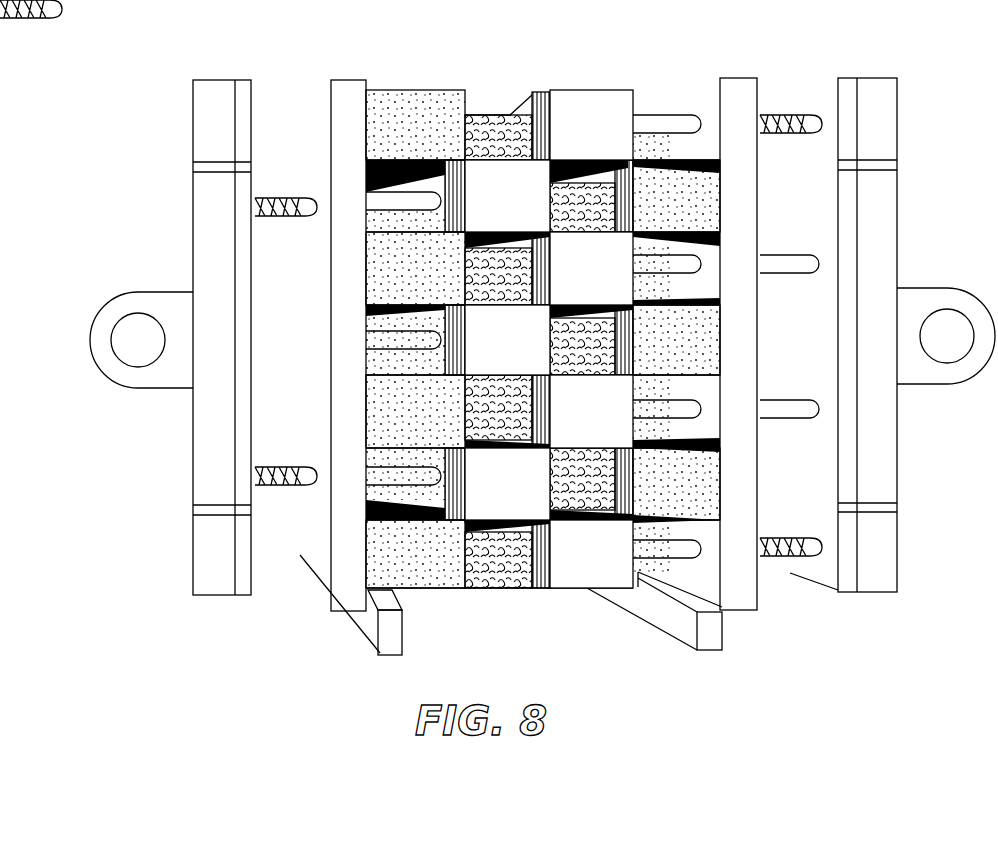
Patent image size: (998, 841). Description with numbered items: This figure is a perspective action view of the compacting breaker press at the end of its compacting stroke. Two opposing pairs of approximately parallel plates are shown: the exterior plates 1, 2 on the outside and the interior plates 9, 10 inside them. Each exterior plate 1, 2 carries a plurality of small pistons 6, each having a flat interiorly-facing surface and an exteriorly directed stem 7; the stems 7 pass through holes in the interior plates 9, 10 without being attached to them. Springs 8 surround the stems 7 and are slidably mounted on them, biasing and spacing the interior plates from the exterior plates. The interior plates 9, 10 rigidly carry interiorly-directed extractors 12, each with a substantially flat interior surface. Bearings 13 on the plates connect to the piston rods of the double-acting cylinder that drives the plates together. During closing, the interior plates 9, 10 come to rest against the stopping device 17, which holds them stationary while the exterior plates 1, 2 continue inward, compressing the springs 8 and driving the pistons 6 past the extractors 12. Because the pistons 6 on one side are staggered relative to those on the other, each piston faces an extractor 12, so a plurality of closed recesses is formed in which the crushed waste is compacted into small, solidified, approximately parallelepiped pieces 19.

The exterior plate 1 is at (193, 455).
The exterior plate 2 is at (895, 445).
The piston 6 is at (376, 393).
The stem 7 is at (675, 128).
The spring 8 is at (790, 108).
The interior plate 9 is at (362, 82).
The interior plate 10 is at (752, 598).
The extractor 12 is at (572, 100).
The bearing 13 is at (112, 310).
The stopping device 17 is at (388, 652).
The compacted piece 19 is at (632, 160).